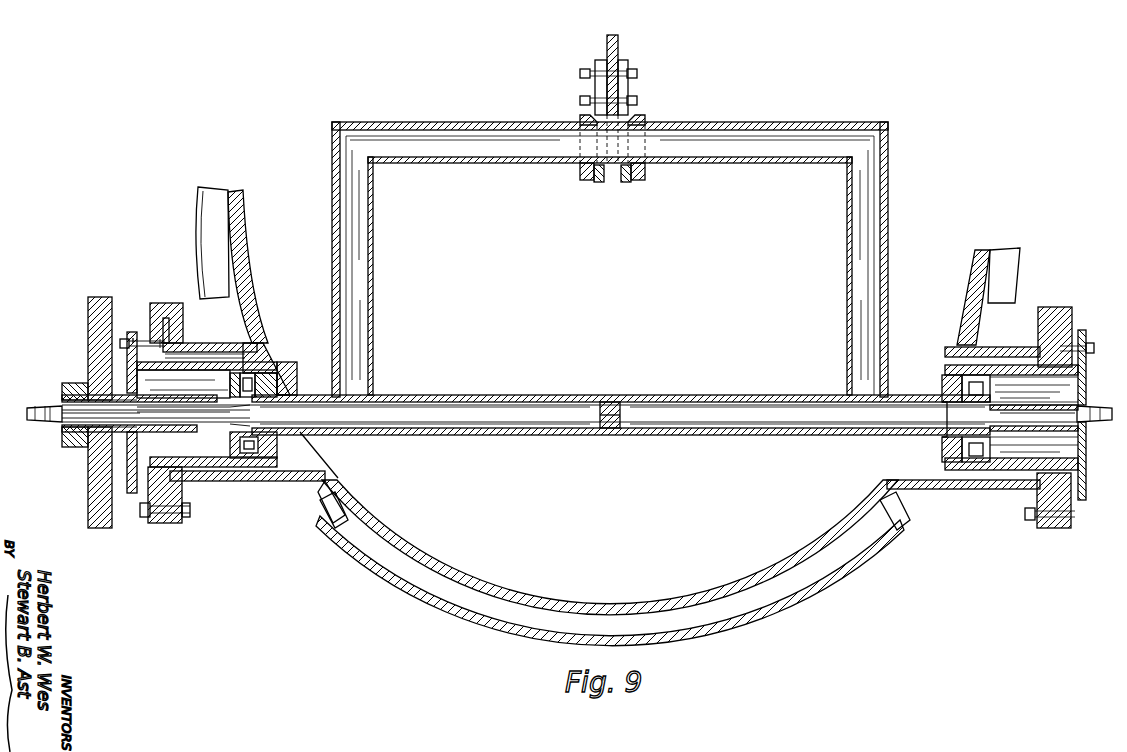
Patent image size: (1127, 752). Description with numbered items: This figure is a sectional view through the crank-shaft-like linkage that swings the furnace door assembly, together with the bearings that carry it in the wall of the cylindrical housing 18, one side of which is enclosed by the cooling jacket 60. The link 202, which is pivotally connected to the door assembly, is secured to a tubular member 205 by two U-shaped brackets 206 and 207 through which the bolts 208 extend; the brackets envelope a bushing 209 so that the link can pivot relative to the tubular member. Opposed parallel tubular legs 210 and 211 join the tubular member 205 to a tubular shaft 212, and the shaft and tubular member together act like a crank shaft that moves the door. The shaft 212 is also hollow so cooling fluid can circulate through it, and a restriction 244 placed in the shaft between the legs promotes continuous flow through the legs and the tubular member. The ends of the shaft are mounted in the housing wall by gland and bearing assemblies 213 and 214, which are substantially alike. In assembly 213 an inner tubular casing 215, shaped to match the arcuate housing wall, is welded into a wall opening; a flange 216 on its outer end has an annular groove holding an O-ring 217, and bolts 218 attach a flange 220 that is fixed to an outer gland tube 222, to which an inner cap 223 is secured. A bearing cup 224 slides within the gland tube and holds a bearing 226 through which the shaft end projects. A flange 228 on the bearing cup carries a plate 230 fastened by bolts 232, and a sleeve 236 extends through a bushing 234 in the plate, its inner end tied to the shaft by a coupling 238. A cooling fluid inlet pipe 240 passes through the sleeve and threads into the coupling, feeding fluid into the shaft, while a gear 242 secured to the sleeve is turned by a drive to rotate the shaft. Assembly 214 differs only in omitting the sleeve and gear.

The housing 18 is at (240, 232).
The cooling jacket 60 is at (735, 605).
The link 202 is at (618, 42).
The tubular member 205 is at (465, 122).
The U-shaped bracket 206 is at (628, 66).
The U-shaped bracket 207 is at (600, 60).
The bolts 208 is at (637, 74).
The bushing 209 is at (645, 110).
The leg 210 is at (888, 218).
The leg 211 is at (333, 182).
The tubular shaft 212 is at (518, 395).
The gland and bearing assembly 213 is at (180, 276).
The gland and bearing assembly 214 is at (1058, 294).
The tubular casing 215 is at (258, 481).
The flange 216 is at (185, 520).
The O-ring 217 is at (160, 325).
The bolts 218 is at (148, 500).
The flange 220 is at (152, 520).
The outer gland tube 222 is at (230, 360).
The inner cap 223 is at (302, 350).
The bearing cup 224 is at (205, 373).
The bearing 226 is at (270, 343).
The flange 228 is at (137, 338).
The plate 230 is at (132, 358).
The bolts 232 is at (122, 340).
The bushing 234 is at (146, 401).
The sleeve 236 is at (95, 440).
The coupling 238 is at (278, 442).
The cooling fluid inlet pipe 240 is at (45, 425).
The gear 242 is at (88, 495).
The restriction 244 is at (610, 435).